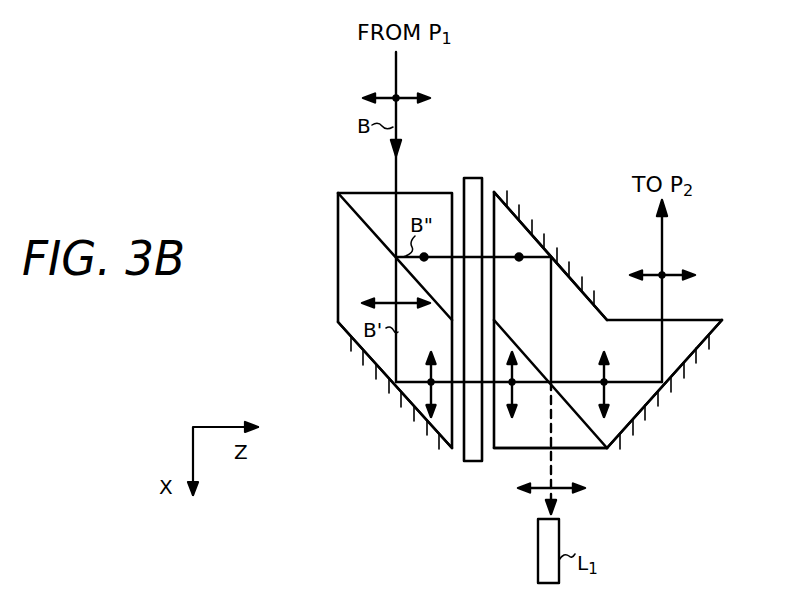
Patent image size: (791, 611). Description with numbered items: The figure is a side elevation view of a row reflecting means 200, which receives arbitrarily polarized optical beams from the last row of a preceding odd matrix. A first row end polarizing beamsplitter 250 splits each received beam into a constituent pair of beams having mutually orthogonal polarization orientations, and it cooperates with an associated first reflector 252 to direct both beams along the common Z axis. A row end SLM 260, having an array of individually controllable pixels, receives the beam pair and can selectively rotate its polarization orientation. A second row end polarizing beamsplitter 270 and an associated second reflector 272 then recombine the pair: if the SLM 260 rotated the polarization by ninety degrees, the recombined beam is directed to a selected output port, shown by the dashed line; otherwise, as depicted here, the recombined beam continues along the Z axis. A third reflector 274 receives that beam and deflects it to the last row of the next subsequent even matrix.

The row reflecting means 200 is at (533, 180).
The first row end polarizing beamsplitter 250 is at (362, 203).
The first reflector 252 is at (379, 379).
The row end SLM 260 is at (469, 462).
The second row end polarizing beamsplitter 270 is at (575, 436).
The second reflector 272 is at (568, 262).
The third reflector 274 is at (690, 359).